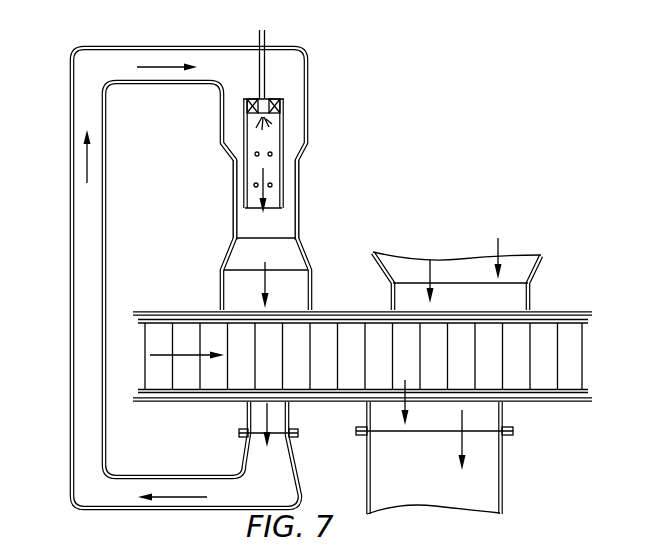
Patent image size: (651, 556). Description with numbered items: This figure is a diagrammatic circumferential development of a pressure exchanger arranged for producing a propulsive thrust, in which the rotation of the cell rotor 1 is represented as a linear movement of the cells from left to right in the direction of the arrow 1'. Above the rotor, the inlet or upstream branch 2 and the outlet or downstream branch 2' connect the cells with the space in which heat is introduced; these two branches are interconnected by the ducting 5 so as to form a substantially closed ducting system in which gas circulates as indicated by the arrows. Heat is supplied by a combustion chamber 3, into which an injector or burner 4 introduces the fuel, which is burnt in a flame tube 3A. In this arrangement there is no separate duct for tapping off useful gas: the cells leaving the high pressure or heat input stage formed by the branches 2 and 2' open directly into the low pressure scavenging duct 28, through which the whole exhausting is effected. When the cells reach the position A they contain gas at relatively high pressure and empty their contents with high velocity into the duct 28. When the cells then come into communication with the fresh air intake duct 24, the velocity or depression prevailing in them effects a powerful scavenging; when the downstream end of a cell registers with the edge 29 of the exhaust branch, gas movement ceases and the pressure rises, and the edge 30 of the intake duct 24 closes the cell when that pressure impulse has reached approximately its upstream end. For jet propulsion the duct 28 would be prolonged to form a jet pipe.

The cell rotor 1 is at (362, 378).
The direction of cell movement 1' is at (186, 344).
The inlet or upstream branch 2 is at (246, 285).
The outlet or downstream branch 2' is at (248, 425).
The combustion chamber 3 is at (291, 167).
The flame tube 3A is at (246, 185).
The injector or burner 4 is at (266, 103).
The ducting 5 is at (84, 239).
The fresh air intake duct 24 is at (524, 264).
The low pressure scavenging duct 28 is at (475, 420).
The edge of scavenging or exhaust branch 29 is at (505, 405).
The edge of intake duct 30 is at (530, 301).
The cell position A is at (384, 368).